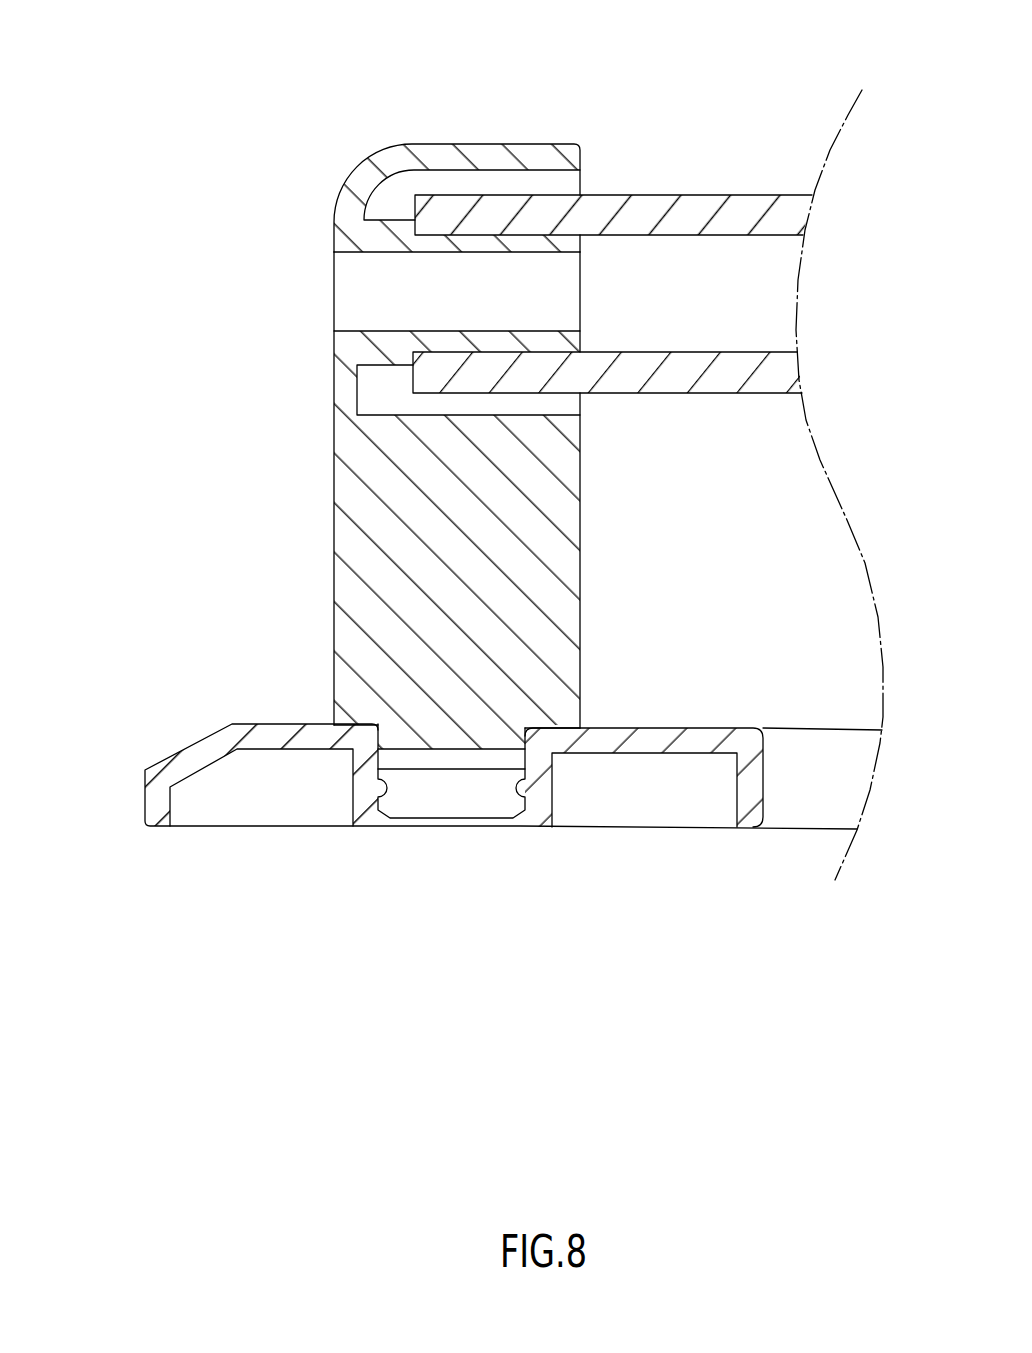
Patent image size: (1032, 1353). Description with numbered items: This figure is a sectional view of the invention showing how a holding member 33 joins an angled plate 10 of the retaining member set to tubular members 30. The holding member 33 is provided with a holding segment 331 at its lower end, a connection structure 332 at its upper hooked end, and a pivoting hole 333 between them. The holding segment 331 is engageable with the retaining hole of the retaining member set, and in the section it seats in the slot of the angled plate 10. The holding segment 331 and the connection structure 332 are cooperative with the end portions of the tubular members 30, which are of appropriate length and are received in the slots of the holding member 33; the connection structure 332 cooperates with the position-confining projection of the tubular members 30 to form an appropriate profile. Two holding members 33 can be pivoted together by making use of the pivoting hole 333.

The angled plate 10 is at (193, 757).
The tubular member 30 is at (703, 208).
The holding member 33 is at (362, 492).
The holding segment 331 is at (462, 798).
The connection structure 332 is at (482, 238).
The pivoting hole 333 is at (368, 287).